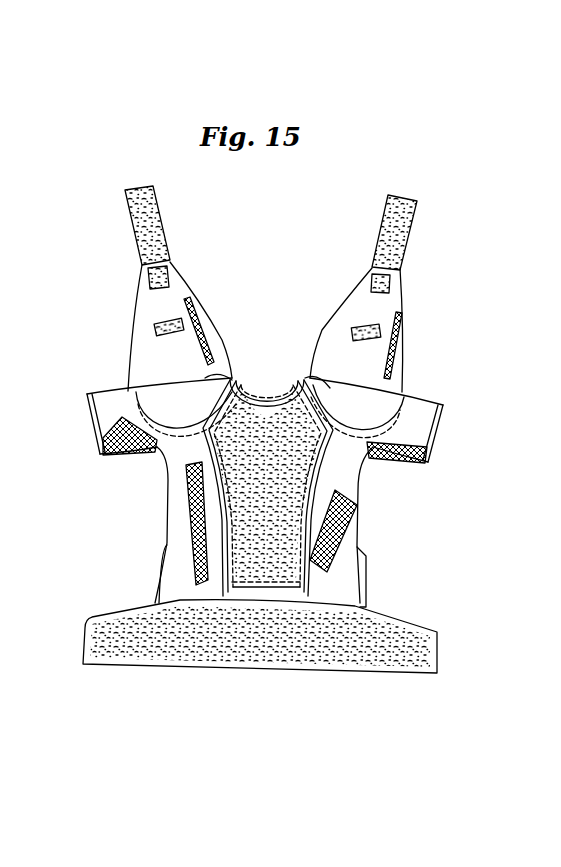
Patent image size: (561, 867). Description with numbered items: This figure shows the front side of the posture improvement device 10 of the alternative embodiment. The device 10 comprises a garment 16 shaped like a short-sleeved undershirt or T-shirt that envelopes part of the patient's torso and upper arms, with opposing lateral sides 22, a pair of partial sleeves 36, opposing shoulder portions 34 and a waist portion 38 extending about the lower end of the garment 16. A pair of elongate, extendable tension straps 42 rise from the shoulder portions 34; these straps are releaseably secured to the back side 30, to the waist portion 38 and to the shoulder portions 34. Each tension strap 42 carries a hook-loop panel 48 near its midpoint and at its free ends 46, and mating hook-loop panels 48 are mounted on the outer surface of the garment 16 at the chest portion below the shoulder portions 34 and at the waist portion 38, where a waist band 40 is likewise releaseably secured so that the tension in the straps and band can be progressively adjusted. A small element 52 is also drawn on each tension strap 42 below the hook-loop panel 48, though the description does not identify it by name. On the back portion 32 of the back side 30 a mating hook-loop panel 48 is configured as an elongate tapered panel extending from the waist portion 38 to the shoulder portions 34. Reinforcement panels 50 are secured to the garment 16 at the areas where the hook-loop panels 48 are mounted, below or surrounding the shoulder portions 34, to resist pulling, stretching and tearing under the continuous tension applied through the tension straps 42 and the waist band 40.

The posture improvement device 10 is at (174, 164).
The garment 16 is at (90, 425).
The lateral sides 22 is at (154, 518).
The back side 30 is at (323, 488).
The back portion 32 is at (270, 474).
The shoulder portions 34 is at (303, 372).
The partial sleeves 36 is at (120, 452).
The waist portion 38 is at (187, 667).
The waist band 40 is at (293, 648).
The tension straps 42 is at (133, 326).
The free ends 46 is at (128, 191).
The hook-loop panel 48 is at (141, 223).
The reinforcement panels 50 is at (137, 391).
The strap fastener tab 52 is at (156, 330).